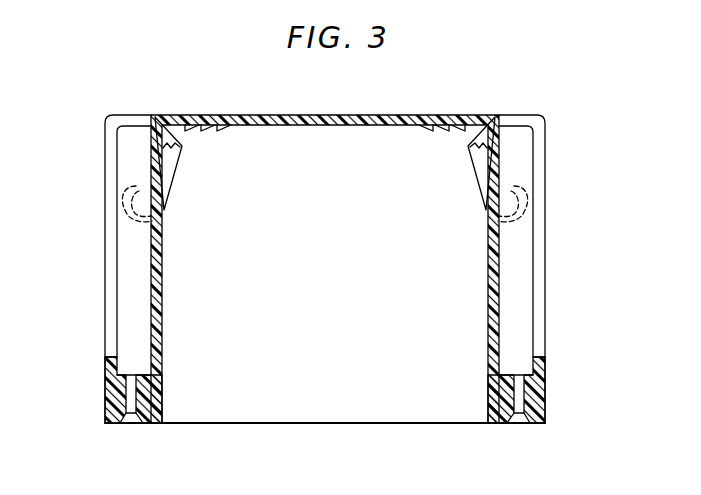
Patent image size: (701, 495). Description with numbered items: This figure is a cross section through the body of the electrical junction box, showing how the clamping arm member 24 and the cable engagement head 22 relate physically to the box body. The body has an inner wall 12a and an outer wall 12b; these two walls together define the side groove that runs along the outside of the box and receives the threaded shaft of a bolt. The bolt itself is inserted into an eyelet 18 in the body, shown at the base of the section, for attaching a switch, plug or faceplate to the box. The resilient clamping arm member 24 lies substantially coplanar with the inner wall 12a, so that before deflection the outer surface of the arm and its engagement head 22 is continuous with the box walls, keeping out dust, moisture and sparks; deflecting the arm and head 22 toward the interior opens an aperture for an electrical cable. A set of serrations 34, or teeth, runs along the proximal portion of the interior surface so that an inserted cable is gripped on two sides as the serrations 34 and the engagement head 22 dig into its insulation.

The inner wall 12a is at (500, 264).
The outer wall 12b is at (546, 323).
The eyelet 18 is at (157, 424).
The cable engagement head 22 is at (163, 122).
The clamping arm member 24 is at (158, 161).
The serrations 34 is at (222, 128).